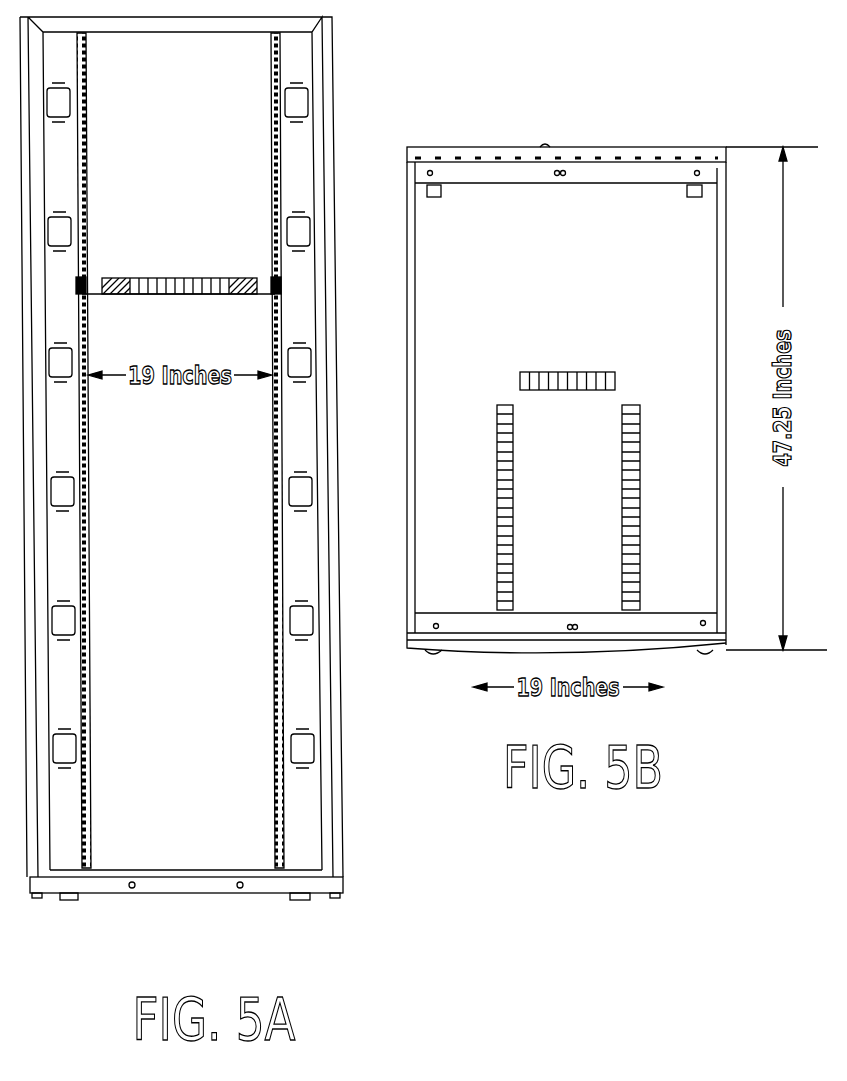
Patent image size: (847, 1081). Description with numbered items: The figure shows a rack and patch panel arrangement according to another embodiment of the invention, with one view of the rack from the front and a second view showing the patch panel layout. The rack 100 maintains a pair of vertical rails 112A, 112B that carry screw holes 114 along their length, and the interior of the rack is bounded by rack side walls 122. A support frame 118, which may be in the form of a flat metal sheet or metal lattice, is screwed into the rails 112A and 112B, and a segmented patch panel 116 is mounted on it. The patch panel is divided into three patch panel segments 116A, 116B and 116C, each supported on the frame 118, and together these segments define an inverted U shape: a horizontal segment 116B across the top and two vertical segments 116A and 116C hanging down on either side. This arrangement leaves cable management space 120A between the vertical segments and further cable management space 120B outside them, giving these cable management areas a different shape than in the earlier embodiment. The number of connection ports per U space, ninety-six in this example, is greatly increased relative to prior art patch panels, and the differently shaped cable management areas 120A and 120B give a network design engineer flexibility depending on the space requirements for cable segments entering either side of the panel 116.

In FIG. 5A, the rack 100 is at (338, 48).
In FIG. 5A, the rail 112A is at (85, 104).
In FIG. 5A, the rail 112B is at (272, 149).
In FIG. 5A, the screw holes 114 is at (82, 453).
In FIG. 5A, the patch panel 116 is at (193, 277).
In FIG. 5A, the support frame 118 is at (263, 295).
In FIG. 5B, the patch panel segment 116A is at (500, 463).
In FIG. 5B, the patch panel segment 116B is at (583, 373).
In FIG. 5B, the patch panel segment 116C is at (642, 573).
In FIG. 5B, the cable management space 120A is at (572, 513).
In FIG. 5B, the cable management space 120B is at (621, 346).
In FIG. 5B, the rack side walls 122 is at (715, 280).